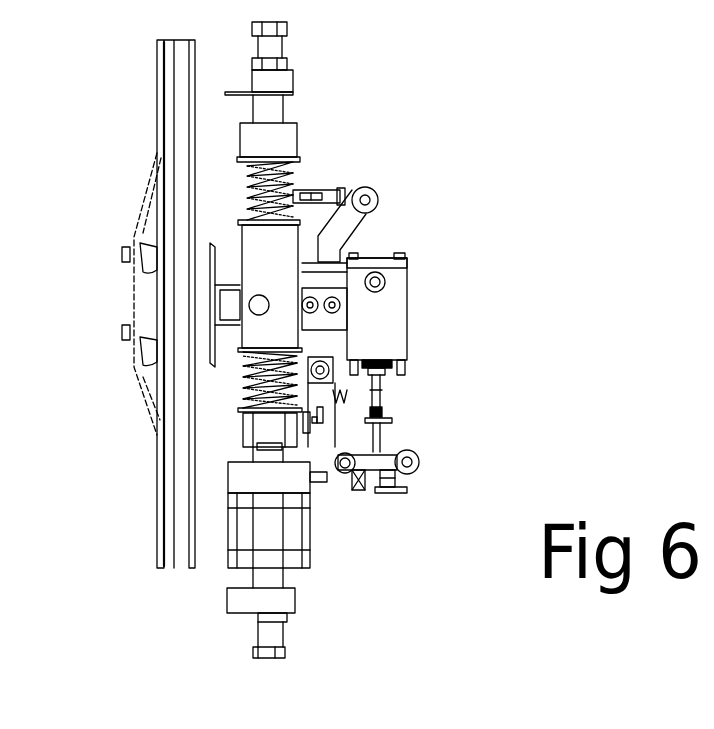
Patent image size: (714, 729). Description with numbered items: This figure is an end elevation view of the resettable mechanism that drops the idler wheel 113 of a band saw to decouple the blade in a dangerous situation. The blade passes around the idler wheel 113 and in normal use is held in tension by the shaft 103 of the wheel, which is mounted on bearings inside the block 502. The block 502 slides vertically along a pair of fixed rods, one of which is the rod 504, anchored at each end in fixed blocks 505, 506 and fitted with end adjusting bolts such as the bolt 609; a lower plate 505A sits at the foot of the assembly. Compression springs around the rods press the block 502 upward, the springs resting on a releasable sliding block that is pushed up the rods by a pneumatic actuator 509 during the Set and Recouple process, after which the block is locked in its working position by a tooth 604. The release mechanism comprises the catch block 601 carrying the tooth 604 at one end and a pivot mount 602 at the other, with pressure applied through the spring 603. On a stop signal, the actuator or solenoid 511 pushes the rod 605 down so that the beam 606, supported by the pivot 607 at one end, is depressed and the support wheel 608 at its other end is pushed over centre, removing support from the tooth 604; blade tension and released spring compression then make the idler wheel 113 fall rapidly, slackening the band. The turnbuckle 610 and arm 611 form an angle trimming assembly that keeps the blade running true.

The idler wheel 113 is at (155, 102).
The shaft 103 is at (217, 282).
The block 502 is at (292, 268).
The fixed rod 504 is at (275, 118).
The fixed block 505 is at (303, 70).
The lower plate 505A is at (230, 600).
The fixed block 506 is at (293, 182).
The pneumatic actuator 509 is at (307, 517).
The actuator or solenoid 511 is at (398, 283).
The catch block 601 is at (365, 430).
The pivot mount 602 is at (340, 345).
The spring 603 is at (380, 388).
The tooth 604 is at (300, 443).
The rod 605 is at (352, 405).
The beam 606 is at (387, 450).
The pivot 607 is at (413, 458).
The support wheel 608 is at (343, 472).
The end adjusting bolt 609 is at (287, 653).
The turnbuckle 610 is at (298, 186).
The arm 611 is at (374, 208).